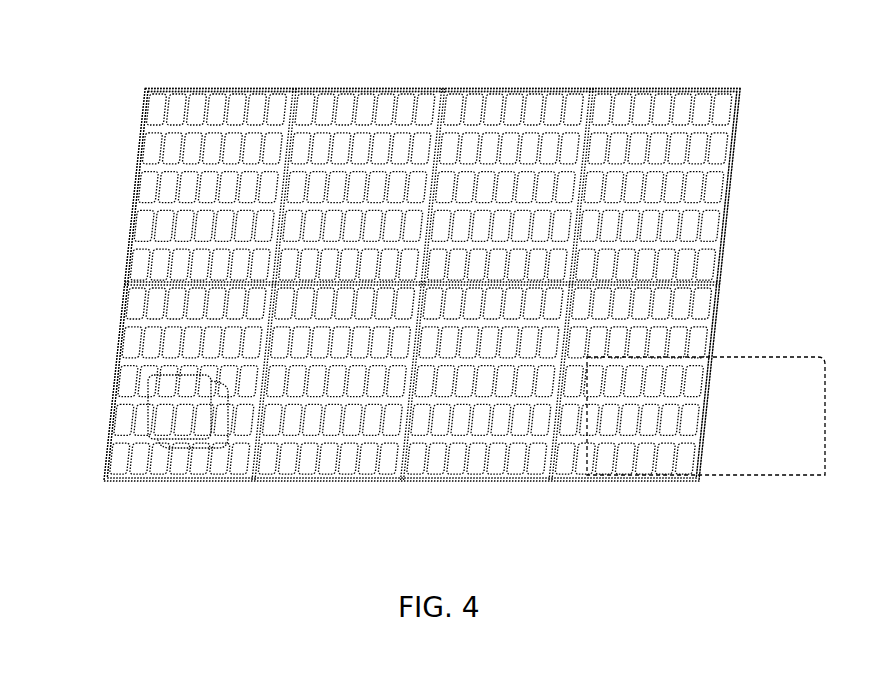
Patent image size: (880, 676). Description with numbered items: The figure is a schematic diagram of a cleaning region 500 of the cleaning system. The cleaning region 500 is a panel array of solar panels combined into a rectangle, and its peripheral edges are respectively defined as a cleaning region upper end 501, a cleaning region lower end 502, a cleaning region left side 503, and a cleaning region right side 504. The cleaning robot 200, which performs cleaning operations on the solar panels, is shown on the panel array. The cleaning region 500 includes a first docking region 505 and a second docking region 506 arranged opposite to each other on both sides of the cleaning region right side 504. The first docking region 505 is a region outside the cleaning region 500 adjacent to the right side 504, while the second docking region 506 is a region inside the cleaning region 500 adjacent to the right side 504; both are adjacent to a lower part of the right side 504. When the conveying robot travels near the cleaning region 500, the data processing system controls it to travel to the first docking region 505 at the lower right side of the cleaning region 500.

The cleaning region 500 is at (738, 88).
The cleaning region upper end 501 is at (478, 90).
The cleaning region lower end 502 is at (253, 480).
The cleaning region left side 503 is at (137, 195).
The cleaning region right side 504 is at (728, 200).
The first docking region 505 is at (760, 477).
The second docking region 506 is at (650, 475).
The cleaning robot 200 is at (160, 390).